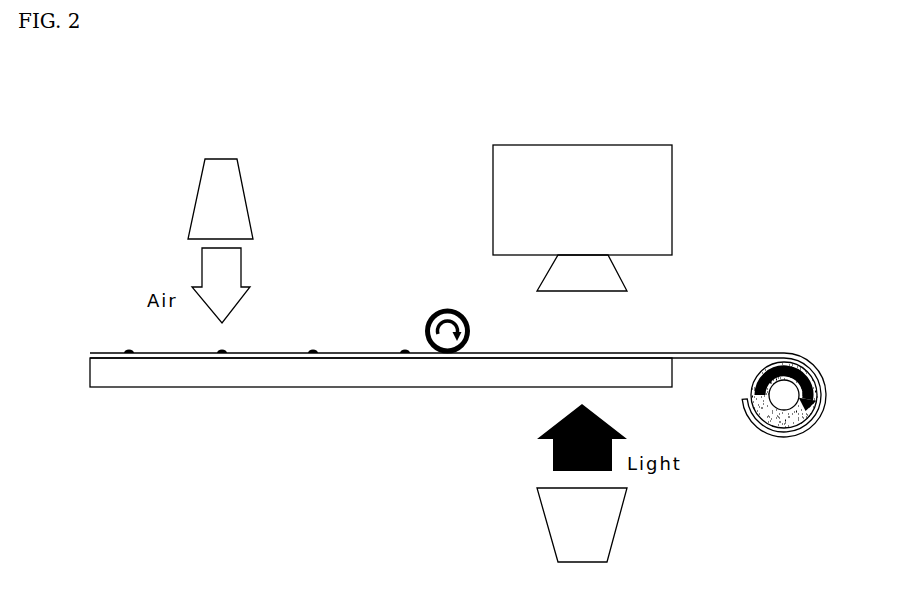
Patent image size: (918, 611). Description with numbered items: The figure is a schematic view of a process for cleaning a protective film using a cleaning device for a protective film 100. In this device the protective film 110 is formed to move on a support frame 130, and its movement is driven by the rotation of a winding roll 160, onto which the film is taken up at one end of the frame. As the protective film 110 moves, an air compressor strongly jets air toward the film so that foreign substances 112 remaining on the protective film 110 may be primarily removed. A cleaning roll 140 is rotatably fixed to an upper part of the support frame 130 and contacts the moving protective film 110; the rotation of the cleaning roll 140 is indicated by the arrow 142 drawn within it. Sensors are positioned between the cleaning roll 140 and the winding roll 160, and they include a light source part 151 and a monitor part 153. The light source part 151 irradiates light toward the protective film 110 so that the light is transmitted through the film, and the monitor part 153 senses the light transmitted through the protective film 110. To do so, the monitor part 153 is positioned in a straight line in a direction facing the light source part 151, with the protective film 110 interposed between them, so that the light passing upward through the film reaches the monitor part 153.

The cleaning device for a protective film 100 is at (80, 92).
The protective film 110 is at (656, 353).
The foreign substances 112 is at (312, 348).
The support frame 130 is at (258, 378).
The cleaning roll 140 is at (430, 309).
The roller rotation arrow 142 is at (466, 310).
The light source part 151 is at (603, 535).
The monitor part 153 is at (517, 160).
The winding roll 160 is at (760, 418).